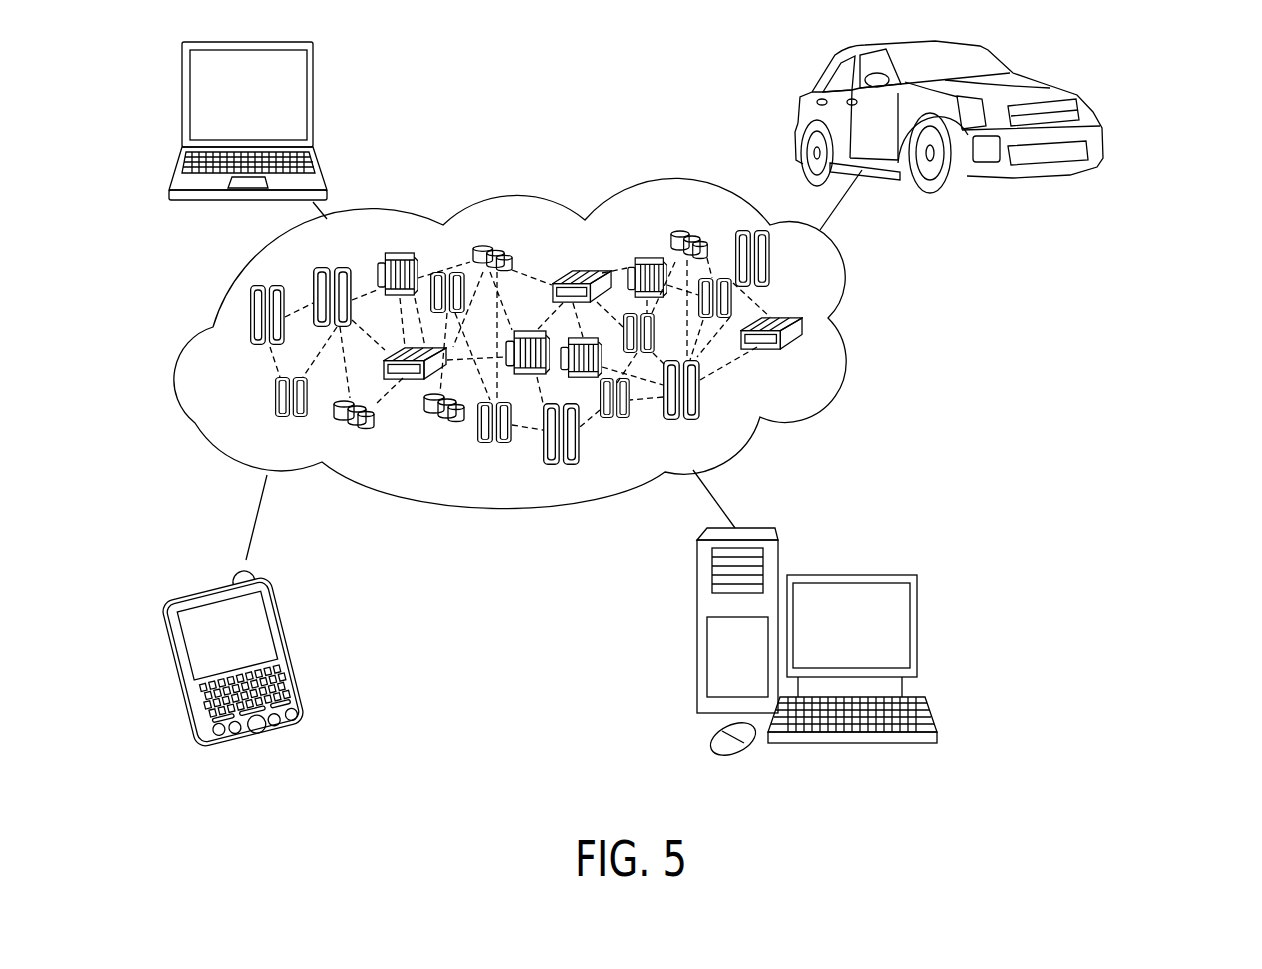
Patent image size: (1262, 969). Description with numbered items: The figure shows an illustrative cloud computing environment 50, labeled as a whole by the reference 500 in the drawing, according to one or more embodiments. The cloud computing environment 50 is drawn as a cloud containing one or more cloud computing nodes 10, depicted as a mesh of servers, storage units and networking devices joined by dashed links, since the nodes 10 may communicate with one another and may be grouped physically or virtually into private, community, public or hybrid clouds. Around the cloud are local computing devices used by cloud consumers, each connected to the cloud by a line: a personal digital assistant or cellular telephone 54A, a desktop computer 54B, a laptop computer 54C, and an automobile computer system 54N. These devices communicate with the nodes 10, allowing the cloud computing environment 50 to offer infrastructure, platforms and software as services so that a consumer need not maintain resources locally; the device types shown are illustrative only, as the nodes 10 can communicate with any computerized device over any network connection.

The cloud computing environment 500 is at (1192, 88).
The cloud computing environment 50 is at (868, 270).
The cloud computing nodes 10 is at (832, 384).
The personal digital assistant or cellular telephone 54A is at (282, 625).
The desktop computer 54B is at (918, 623).
The laptop computer 54C is at (315, 100).
The automobile computer system 54N is at (985, 62).